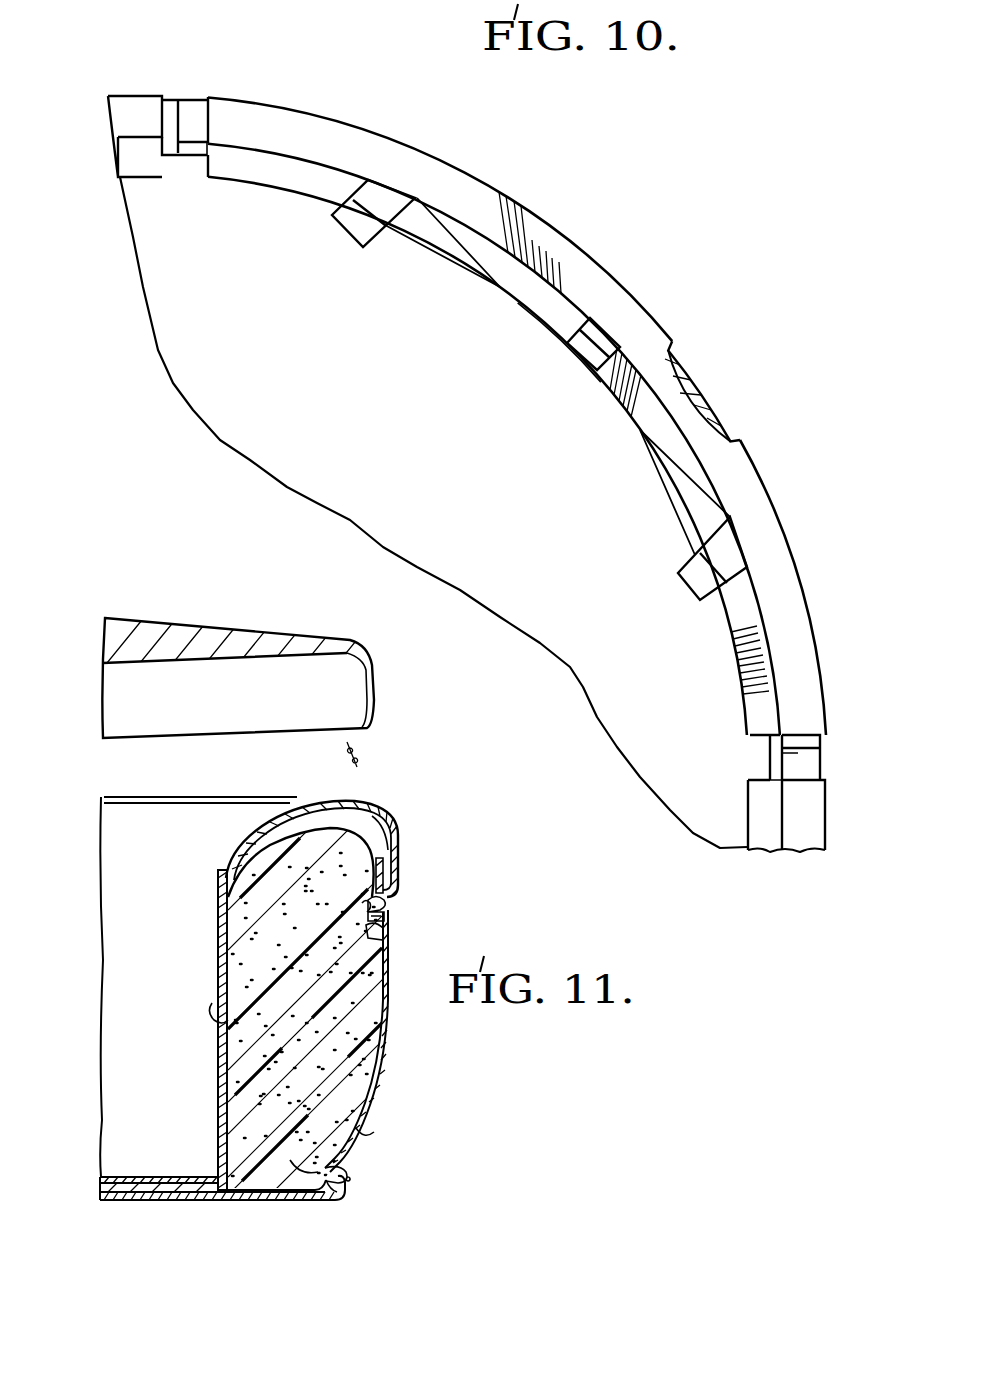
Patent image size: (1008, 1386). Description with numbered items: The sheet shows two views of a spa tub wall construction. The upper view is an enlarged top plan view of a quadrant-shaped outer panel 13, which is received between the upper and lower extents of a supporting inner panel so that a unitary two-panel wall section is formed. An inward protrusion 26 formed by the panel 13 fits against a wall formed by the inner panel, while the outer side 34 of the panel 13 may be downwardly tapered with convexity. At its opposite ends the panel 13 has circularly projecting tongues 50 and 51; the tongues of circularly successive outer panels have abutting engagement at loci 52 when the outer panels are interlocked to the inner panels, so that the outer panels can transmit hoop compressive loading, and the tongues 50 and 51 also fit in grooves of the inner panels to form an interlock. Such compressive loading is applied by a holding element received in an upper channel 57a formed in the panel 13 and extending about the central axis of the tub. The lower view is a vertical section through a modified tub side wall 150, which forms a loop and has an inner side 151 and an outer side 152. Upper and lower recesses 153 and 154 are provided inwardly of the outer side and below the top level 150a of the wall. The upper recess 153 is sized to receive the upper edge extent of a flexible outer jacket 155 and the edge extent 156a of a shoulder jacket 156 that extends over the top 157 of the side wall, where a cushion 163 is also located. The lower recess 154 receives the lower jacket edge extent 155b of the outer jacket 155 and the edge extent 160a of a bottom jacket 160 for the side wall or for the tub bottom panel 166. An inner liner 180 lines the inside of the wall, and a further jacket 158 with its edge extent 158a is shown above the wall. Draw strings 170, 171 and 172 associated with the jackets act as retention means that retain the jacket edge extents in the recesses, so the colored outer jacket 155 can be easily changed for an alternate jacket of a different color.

In FIG. 10, the outer panel 13 is at (125, 92).
In FIG. 10, the inward protrusion 26 is at (520, 290).
In FIG. 10, the outer side 34 is at (795, 555).
In FIG. 10, the tongue 50 is at (198, 110).
In FIG. 10, the tongue 51 is at (170, 100).
In FIG. 10, the locus of abutting engagement 52 is at (188, 150).
In FIG. 10, the upper channel 57a is at (705, 400).
In FIG. 11, the tub side wall 150 is at (372, 1068).
In FIG. 11, the top level 150a is at (382, 800).
In FIG. 11, the inner side 151 is at (230, 1026).
In FIG. 11, the outer side 152 is at (385, 1090).
In FIG. 11, the upper recess 153 is at (367, 907).
In FIG. 11, the lower recess 154 is at (290, 1167).
In FIG. 11, the flexible outer jacket 155 is at (398, 1036).
In FIG. 11, the jacket edge extent 155b is at (362, 1130).
In FIG. 11, the shoulder jacket 156 is at (250, 850).
In FIG. 11, the edge extent of shoulder jacket 156a is at (396, 856).
In FIG. 11, the top of the side wall 157 is at (350, 815).
In FIG. 11, the top plate 158 is at (152, 612).
In FIG. 11, the top plate skin 158a is at (375, 690).
In FIG. 11, the bottom jacket 160 is at (232, 1208).
In FIG. 11, the edge extent of bottom jacket 160a is at (327, 1200).
In FIG. 11, the cushion 163 is at (377, 828).
In FIG. 11, the tub bottom panel 166 is at (133, 1200).
In FIG. 11, the draw string 170 is at (418, 902).
In FIG. 11, the draw string 171 is at (352, 1175).
In FIG. 11, the draw string 172 is at (345, 745).
In FIG. 11, the inner liner 180 is at (223, 983).